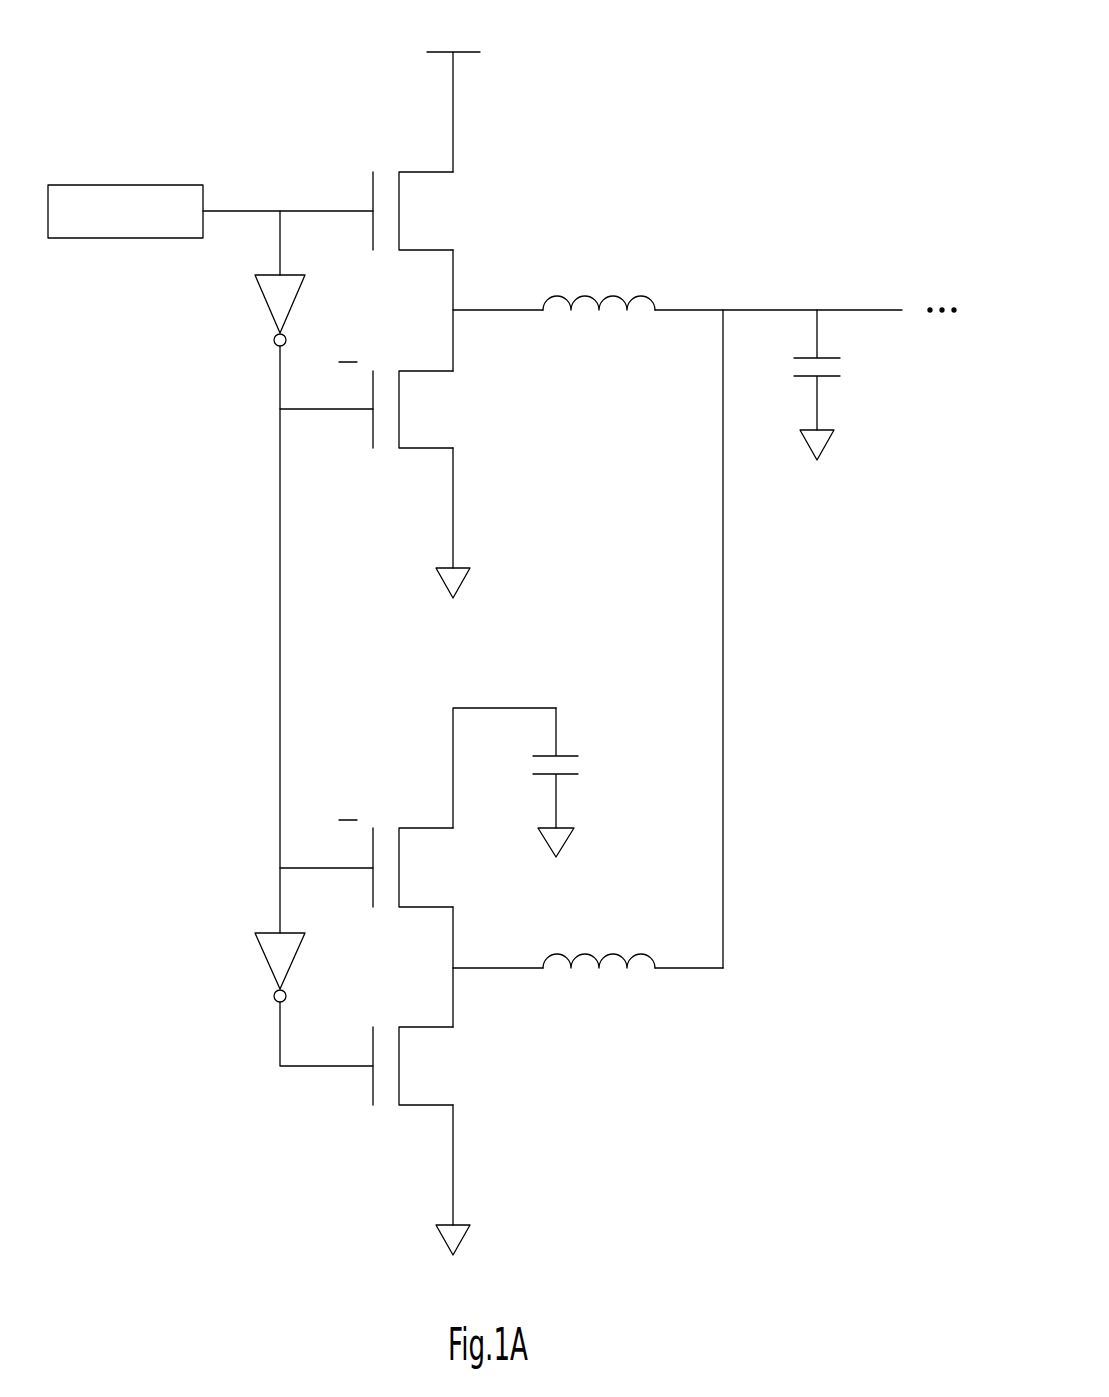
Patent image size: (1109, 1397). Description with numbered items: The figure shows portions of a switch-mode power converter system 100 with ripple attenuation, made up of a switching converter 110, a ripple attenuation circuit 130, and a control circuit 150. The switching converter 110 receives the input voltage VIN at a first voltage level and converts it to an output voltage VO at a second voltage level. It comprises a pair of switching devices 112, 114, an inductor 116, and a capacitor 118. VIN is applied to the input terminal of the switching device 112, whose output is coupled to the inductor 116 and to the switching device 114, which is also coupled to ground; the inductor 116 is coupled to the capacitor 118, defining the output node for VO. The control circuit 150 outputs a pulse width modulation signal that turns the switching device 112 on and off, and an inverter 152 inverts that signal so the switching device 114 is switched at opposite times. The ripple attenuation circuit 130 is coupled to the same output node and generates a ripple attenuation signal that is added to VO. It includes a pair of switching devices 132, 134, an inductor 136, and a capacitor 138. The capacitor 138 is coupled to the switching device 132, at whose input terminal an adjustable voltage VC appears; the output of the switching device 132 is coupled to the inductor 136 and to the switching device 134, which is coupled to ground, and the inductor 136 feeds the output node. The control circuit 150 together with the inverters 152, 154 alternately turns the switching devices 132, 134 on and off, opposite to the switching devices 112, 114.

The switch-mode power converter system 100 is at (851, 40).
The switching converter 110 is at (651, 200).
The switching device 112 is at (373, 240).
The switching device 114 is at (373, 437).
The inductor L1 116 is at (648, 299).
The capacitor 118 is at (842, 369).
The ripple attenuation circuit 130 is at (606, 632).
The switching device 132 is at (373, 896).
The switching device 134 is at (373, 1096).
The inductor LC 136 is at (648, 957).
The capacitor CC 138 is at (582, 768).
The control circuit 150 is at (127, 185).
The inverter 152 is at (270, 312).
The inverter 154 is at (270, 970).